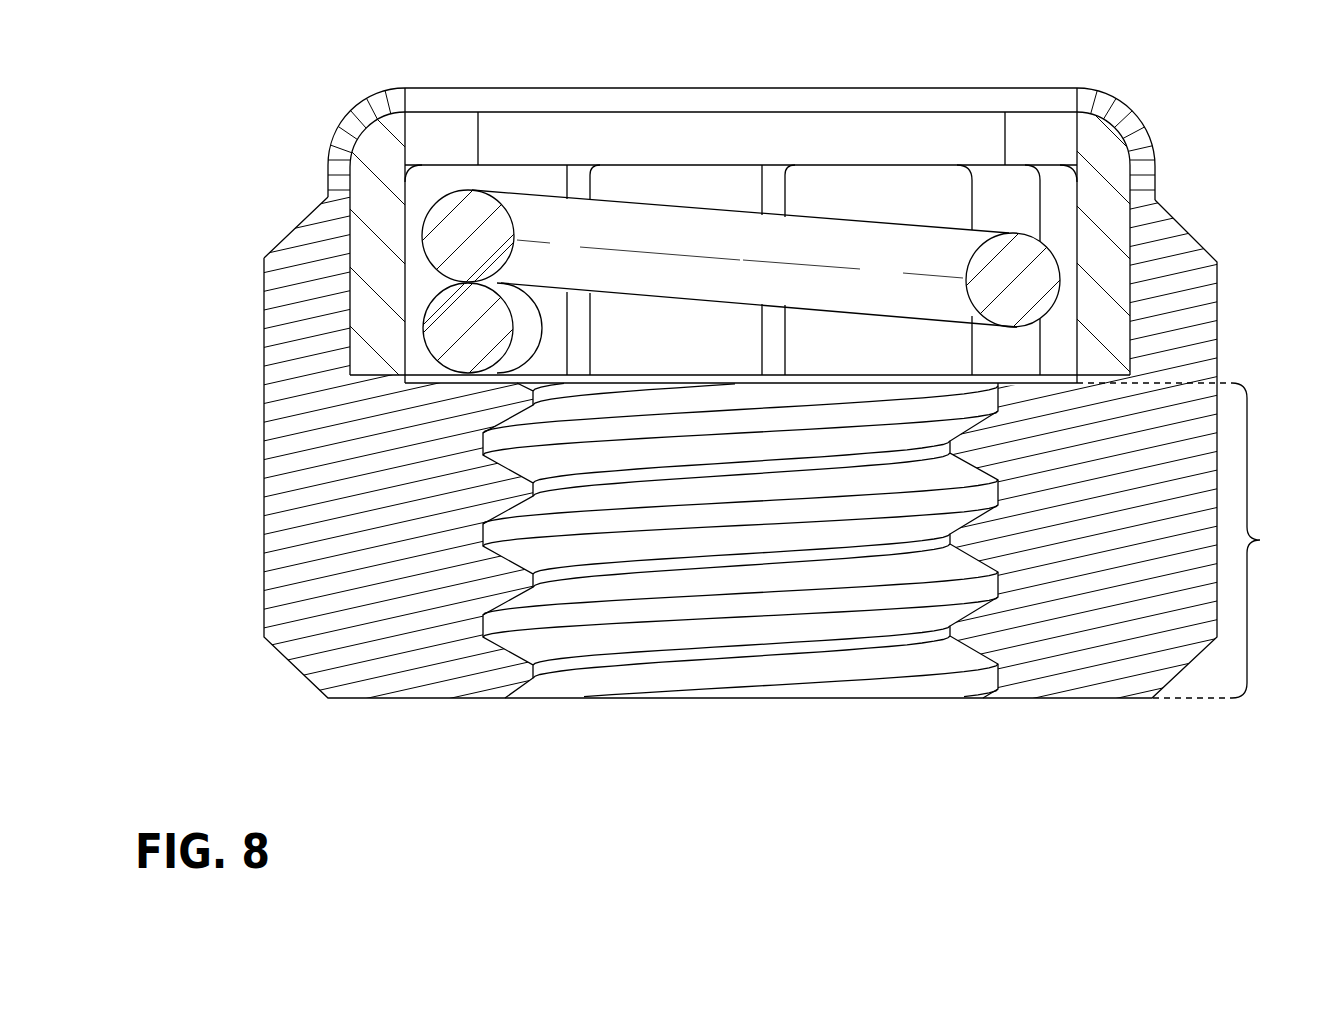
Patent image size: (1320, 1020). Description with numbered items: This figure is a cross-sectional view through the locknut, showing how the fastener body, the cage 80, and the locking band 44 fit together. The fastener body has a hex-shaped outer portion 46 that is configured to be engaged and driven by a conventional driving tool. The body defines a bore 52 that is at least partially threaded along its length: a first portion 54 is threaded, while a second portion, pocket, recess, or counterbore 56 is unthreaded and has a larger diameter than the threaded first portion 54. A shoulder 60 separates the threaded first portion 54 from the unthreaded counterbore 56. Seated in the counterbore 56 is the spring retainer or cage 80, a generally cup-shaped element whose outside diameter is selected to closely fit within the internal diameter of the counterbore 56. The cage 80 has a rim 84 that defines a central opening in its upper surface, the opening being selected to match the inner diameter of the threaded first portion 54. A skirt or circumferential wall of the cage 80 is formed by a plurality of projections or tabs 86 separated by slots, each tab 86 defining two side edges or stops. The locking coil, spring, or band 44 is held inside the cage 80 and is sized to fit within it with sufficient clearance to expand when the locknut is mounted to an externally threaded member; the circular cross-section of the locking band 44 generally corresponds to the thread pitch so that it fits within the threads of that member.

The locking band 44 is at (684, 227).
The hex-shaped outer portion 46 is at (264, 493).
The bore 52 is at (688, 586).
The first portion 54 is at (1190, 540).
The counterbore 56 is at (1150, 135).
The shoulder 60 is at (437, 385).
The cage 80 is at (373, 245).
The rim 84 is at (449, 110).
The tabs 86 is at (380, 277).